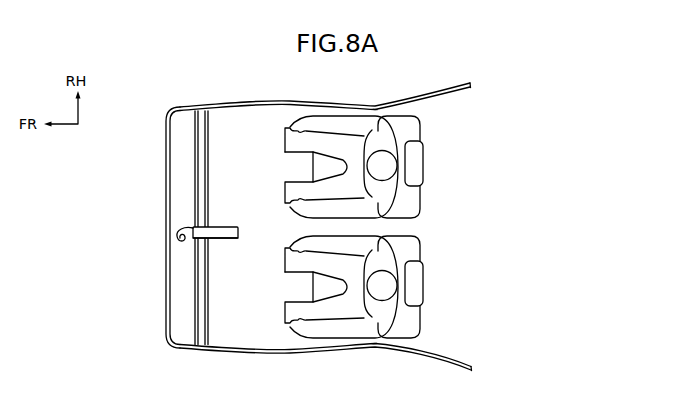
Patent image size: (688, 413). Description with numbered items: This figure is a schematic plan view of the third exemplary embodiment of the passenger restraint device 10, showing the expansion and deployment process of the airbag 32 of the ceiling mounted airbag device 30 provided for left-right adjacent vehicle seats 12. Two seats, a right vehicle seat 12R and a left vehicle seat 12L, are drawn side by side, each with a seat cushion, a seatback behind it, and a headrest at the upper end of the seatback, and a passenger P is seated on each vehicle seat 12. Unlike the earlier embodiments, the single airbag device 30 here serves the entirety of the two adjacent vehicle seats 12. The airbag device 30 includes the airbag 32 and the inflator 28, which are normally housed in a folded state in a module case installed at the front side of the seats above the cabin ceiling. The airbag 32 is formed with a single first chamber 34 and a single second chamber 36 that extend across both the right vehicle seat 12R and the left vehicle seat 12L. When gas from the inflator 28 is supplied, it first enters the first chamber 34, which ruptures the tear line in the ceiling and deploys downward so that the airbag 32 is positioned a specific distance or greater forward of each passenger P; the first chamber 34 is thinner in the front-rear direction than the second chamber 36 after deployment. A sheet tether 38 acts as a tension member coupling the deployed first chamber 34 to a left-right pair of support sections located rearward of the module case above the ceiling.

The passenger restraint device 10 is at (231, 145).
The vehicle seat 12 is at (391, 227).
The right vehicle seat 12R is at (428, 126).
The left vehicle seat 12L is at (428, 246).
The inflator 28 is at (223, 227).
The ceiling mounted airbag device 30 is at (228, 241).
The airbag 32 is at (182, 108).
The first chamber 34 is at (179, 289).
The second chamber 36 is at (209, 137).
The sheet tether 38 is at (307, 103).
The passenger P is at (377, 110).